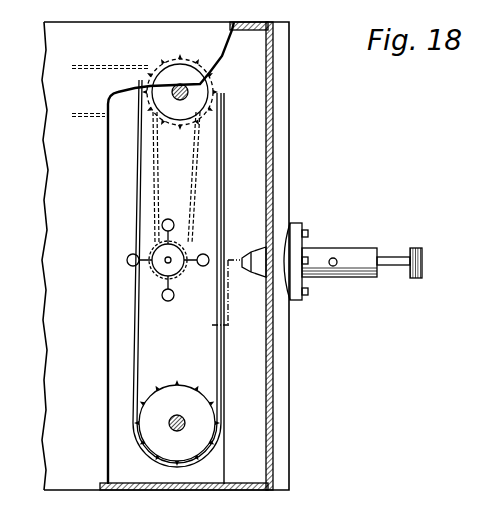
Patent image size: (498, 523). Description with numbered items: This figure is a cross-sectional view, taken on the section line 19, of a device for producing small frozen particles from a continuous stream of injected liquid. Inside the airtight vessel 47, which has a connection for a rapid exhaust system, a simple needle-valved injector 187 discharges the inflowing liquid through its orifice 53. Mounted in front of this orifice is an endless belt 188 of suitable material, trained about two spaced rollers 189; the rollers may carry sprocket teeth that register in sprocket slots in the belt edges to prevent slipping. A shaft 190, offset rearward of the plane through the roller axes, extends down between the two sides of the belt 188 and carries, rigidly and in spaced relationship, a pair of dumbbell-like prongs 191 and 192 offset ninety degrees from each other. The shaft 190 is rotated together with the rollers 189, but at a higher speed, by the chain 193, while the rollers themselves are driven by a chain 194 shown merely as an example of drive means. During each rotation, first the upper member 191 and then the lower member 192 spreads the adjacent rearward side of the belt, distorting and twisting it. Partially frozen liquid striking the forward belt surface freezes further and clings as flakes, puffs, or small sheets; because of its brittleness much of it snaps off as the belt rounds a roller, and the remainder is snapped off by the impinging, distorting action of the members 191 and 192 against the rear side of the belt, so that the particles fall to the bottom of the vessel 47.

The section line 19— 19 is at (452, 275).
The airtight vessel 47 is at (256, 492).
The nozzle 53 is at (246, 259).
The needle-valved injector 187 is at (358, 249).
The endless belt 188 is at (228, 150).
The rollers 189 is at (214, 81).
The shaft 190 is at (167, 263).
The upper dumbbell-like prong 191 is at (190, 249).
The lower dumbbell-like prong 192 is at (175, 288).
The chain 193 is at (153, 179).
The drive chain 194 is at (108, 65).